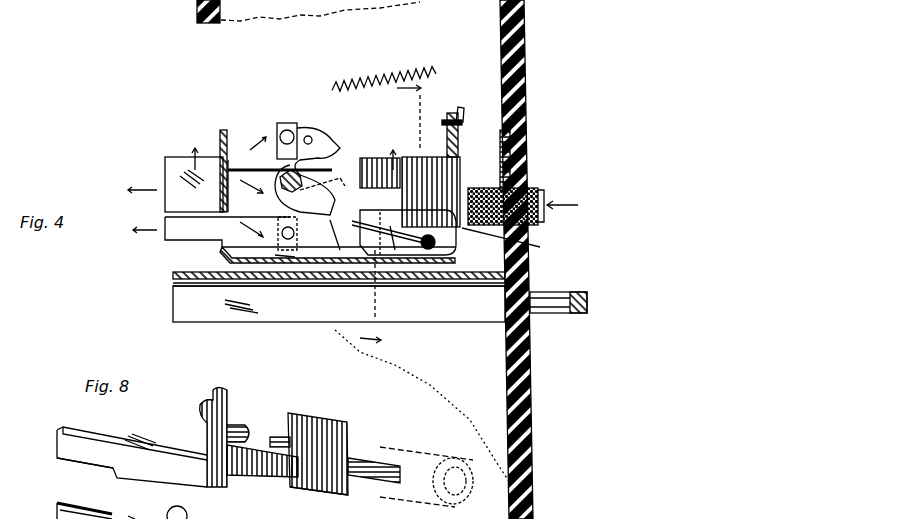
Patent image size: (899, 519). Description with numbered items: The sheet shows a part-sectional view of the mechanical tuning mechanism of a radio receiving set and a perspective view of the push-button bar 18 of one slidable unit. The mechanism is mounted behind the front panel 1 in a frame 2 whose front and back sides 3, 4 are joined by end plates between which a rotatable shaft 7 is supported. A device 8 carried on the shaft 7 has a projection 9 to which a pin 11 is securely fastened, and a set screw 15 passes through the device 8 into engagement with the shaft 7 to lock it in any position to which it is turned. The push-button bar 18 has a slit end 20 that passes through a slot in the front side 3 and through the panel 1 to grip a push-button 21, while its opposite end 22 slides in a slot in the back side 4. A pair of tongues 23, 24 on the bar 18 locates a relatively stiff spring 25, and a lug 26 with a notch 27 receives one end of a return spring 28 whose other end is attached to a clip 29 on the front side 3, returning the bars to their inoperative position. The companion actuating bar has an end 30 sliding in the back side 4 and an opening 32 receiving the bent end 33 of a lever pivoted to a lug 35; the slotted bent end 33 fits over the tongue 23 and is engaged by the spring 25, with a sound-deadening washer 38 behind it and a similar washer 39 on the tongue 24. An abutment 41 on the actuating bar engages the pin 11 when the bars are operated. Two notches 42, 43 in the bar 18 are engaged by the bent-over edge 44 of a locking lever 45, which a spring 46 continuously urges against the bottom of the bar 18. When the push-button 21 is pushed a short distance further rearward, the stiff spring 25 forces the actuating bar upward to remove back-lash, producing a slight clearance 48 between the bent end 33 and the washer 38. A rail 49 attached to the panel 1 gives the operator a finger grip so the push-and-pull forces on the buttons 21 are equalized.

In FIG. 4, the front panel 1 is at (526, 128).
In FIG. 4, the frame 2 is at (210, 147).
In FIG. 4, the front side of frame 3 is at (460, 142).
In FIG. 4, the back side of frame 4 is at (218, 132).
In FIG. 4, the rotatable shaft 7 is at (380, 210).
In FIG. 4, the device 8 is at (236, 224).
In FIG. 4, the projection 9 is at (276, 132).
In FIG. 4, the pin 11 is at (280, 124).
In FIG. 4, the set screw 15 is at (197, 186).
In FIG. 8, the push-button bar 18 is at (155, 452).
In FIG. 4, the end of push-button bar 20 is at (470, 186).
In FIG. 8, the end of push-button bar 20 is at (372, 458).
In FIG. 4, the push-button 21 is at (546, 190).
In FIG. 8, the push-button 21 is at (410, 448).
In FIG. 4, the end of push-button bar 22 is at (186, 242).
In FIG. 8, the end of push-button bar 22 is at (66, 453).
In FIG. 8, the tongue 23 is at (248, 422).
In FIG. 8, the tongue 24 is at (278, 435).
In FIG. 4, the spring 25 is at (335, 130).
In FIG. 8, the lug 26 is at (228, 388).
In FIG. 8, the notch 27 is at (207, 398).
In FIG. 4, the spring 28 is at (372, 135).
In FIG. 4, the clip 29 is at (461, 108).
In FIG. 4, the end of actuating bar 30 is at (165, 172).
In FIG. 4, the opening 32 is at (232, 165).
In FIG. 8, the opening 32 is at (92, 506).
In FIG. 4, the bent end of lever 33 is at (312, 128).
In FIG. 8, the lug 35 is at (188, 512).
In FIG. 4, the washer 38 is at (310, 262).
In FIG. 4, the washer 39 is at (395, 150).
In FIG. 8, the abutment 41 is at (158, 518).
In FIG. 4, the notch 42 is at (312, 262).
In FIG. 8, the notch 42 is at (240, 478).
In FIG. 4, the notch 43 is at (362, 260).
In FIG. 8, the notch 43 is at (282, 480).
In FIG. 4, the bent-over edge 44 is at (513, 242).
In FIG. 4, the locking lever 45 is at (478, 282).
In FIG. 4, the spring 46 is at (392, 262).
In FIG. 4, the clearance 48 is at (332, 262).
In FIG. 4, the rail 49 is at (583, 292).